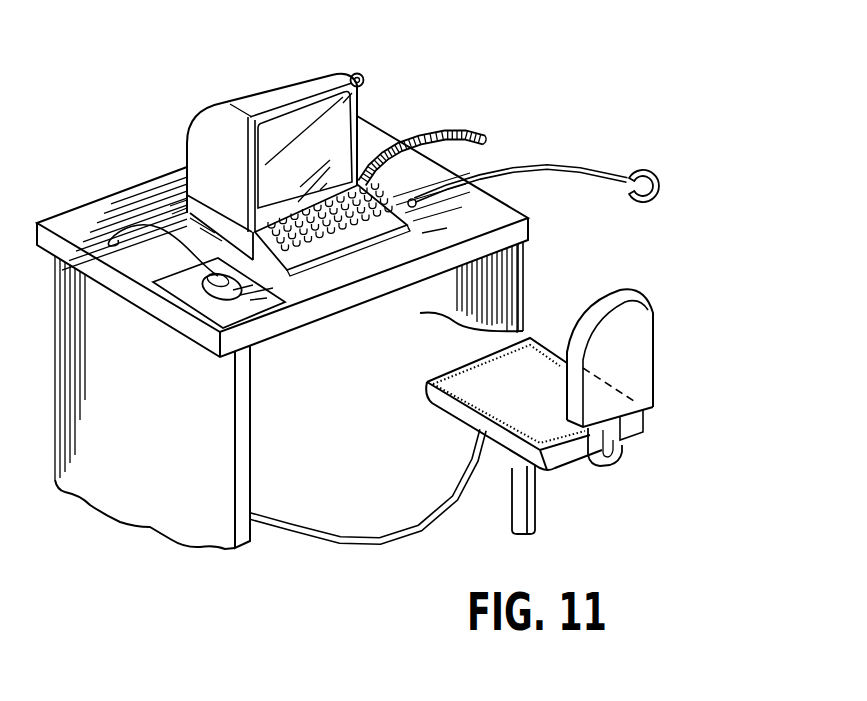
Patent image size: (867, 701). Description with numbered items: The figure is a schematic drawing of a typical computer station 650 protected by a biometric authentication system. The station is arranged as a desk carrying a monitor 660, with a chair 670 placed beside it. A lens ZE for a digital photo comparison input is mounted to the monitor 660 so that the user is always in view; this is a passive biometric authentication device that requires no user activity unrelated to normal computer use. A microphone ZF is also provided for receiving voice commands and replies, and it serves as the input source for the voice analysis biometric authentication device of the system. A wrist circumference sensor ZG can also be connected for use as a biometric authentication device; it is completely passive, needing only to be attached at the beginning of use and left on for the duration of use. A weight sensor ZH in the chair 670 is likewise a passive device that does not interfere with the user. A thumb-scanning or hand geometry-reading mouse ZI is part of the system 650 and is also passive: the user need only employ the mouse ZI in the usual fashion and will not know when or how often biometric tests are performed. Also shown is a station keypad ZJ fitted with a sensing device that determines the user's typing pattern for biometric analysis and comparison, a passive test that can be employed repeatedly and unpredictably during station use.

The computer station 650 is at (166, 136).
The monitor 660 is at (283, 87).
The chair 670 is at (554, 411).
The lens ZE is at (366, 74).
The microphone ZF is at (477, 133).
The wrist circumference sensor ZG is at (563, 167).
The weight sensor ZH is at (427, 387).
The mouse ZI is at (217, 276).
The station keypad ZJ is at (338, 237).